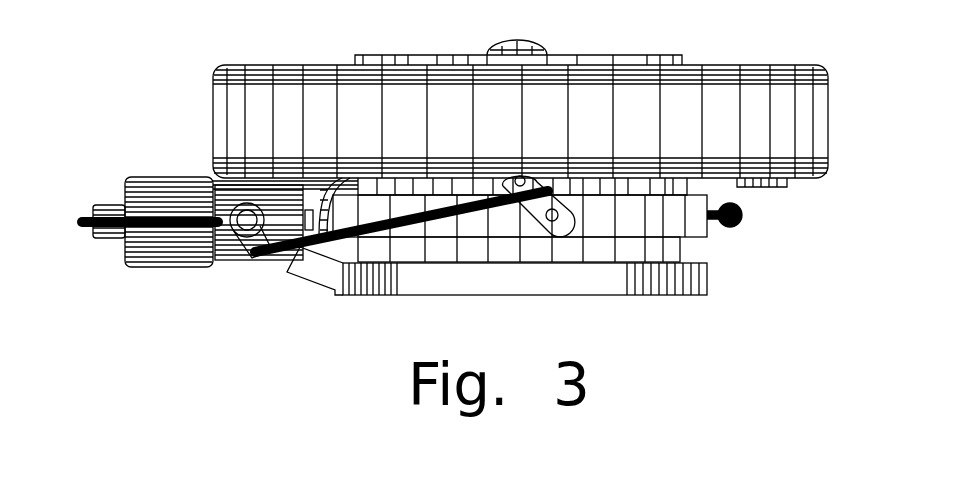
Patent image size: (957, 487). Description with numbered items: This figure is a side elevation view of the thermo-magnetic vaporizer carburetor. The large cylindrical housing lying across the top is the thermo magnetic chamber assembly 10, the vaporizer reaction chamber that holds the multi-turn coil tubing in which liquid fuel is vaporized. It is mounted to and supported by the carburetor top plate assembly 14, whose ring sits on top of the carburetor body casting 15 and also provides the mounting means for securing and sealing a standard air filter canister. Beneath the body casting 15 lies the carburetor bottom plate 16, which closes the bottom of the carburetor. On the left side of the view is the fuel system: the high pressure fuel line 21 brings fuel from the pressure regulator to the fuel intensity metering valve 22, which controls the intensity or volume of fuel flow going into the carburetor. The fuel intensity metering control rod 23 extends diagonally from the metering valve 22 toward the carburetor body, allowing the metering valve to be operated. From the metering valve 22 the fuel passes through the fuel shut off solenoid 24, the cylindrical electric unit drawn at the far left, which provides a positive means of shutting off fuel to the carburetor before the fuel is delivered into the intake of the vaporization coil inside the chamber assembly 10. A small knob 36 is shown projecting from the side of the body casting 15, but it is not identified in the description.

The thermo magnetic chamber assembly 10 is at (827, 78).
The carburetor top plate assembly 14 is at (690, 62).
The carburetor body casting 15 is at (690, 258).
The carburetor bottom plate 16 is at (705, 290).
The high pressure fuel line 21 is at (90, 237).
The fuel intensity metering valve 22 is at (238, 240).
The fuel intensity metering control rod 23 is at (302, 260).
The fuel shut off solenoid 24 is at (170, 178).
The knob 36 is at (743, 224).